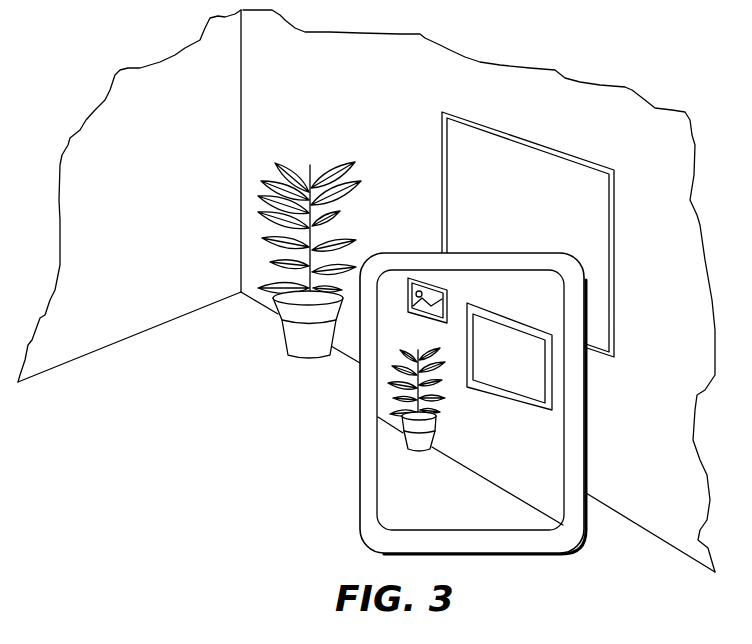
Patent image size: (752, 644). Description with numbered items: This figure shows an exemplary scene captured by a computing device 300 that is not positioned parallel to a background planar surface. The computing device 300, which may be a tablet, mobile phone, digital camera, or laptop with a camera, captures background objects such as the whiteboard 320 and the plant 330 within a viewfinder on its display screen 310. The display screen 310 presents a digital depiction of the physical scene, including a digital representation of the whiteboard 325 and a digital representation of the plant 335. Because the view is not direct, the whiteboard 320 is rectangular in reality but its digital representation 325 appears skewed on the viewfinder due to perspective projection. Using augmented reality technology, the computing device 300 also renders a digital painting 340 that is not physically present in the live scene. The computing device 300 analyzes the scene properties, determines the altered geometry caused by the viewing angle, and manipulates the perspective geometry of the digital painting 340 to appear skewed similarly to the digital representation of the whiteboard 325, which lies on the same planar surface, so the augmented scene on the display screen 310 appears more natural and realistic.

The computing device 300 is at (586, 440).
The display screen 310 is at (378, 461).
The whiteboard 320 is at (530, 138).
The digital representation of whiteboard 325 is at (518, 322).
The plant 330 is at (330, 175).
The digital representation of plant 335 is at (395, 372).
The digital painting 340 is at (428, 278).